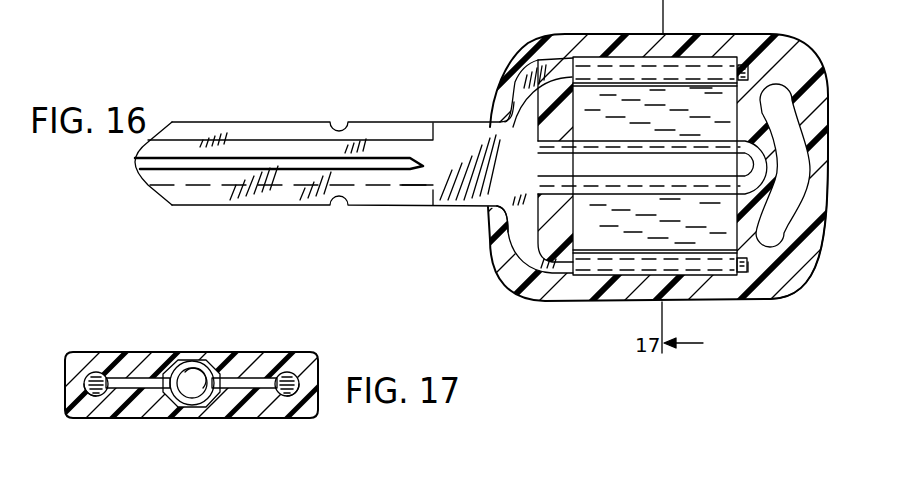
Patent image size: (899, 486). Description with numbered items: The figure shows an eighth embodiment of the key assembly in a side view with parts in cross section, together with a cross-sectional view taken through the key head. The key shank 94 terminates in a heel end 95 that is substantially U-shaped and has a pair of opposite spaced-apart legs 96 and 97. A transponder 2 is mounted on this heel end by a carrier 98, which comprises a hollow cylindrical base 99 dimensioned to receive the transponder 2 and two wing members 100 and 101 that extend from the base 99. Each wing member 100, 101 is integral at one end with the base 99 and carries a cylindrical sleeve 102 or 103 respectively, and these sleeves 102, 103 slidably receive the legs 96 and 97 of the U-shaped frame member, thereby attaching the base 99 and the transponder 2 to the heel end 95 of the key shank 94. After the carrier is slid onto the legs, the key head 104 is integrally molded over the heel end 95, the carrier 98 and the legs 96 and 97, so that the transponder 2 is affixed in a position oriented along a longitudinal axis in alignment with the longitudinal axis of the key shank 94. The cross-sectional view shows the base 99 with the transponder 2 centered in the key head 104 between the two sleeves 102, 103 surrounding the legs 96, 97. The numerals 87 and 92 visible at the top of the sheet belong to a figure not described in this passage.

In FIG. 16, the transponder 2 is at (752, 167).
In FIG. 17, the transponder 2 is at (193, 377).
In FIG. 16, the blade element 87 is at (208, 10).
In FIG. 16, the blade element 92 is at (184, 10).
In FIG. 16, the key shank 94 is at (243, 206).
In FIG. 16, the heel end 95 is at (507, 173).
In FIG. 16, the leg 96 is at (742, 100).
In FIG. 17, the leg 96 is at (282, 400).
In FIG. 16, the leg 97 is at (748, 272).
In FIG. 17, the leg 97 is at (93, 400).
In FIG. 16, the carrier 98 is at (506, 83).
In FIG. 16, the hollow cylindrical base 99 is at (584, 160).
In FIG. 17, the hollow cylindrical base 99 is at (193, 410).
In FIG. 16, the wing member 100 is at (548, 124).
In FIG. 17, the wing member 100 is at (245, 382).
In FIG. 16, the wing member 101 is at (614, 240).
In FIG. 17, the wing member 101 is at (128, 380).
In FIG. 16, the cylindrical sleeve 102 is at (700, 70).
In FIG. 17, the cylindrical sleeve 102 is at (292, 377).
In FIG. 16, the cylindrical sleeve 103 is at (722, 268).
In FIG. 17, the cylindrical sleeve 103 is at (98, 375).
In FIG. 16, the key head 104 is at (812, 90).
In FIG. 17, the key head 104 is at (137, 413).